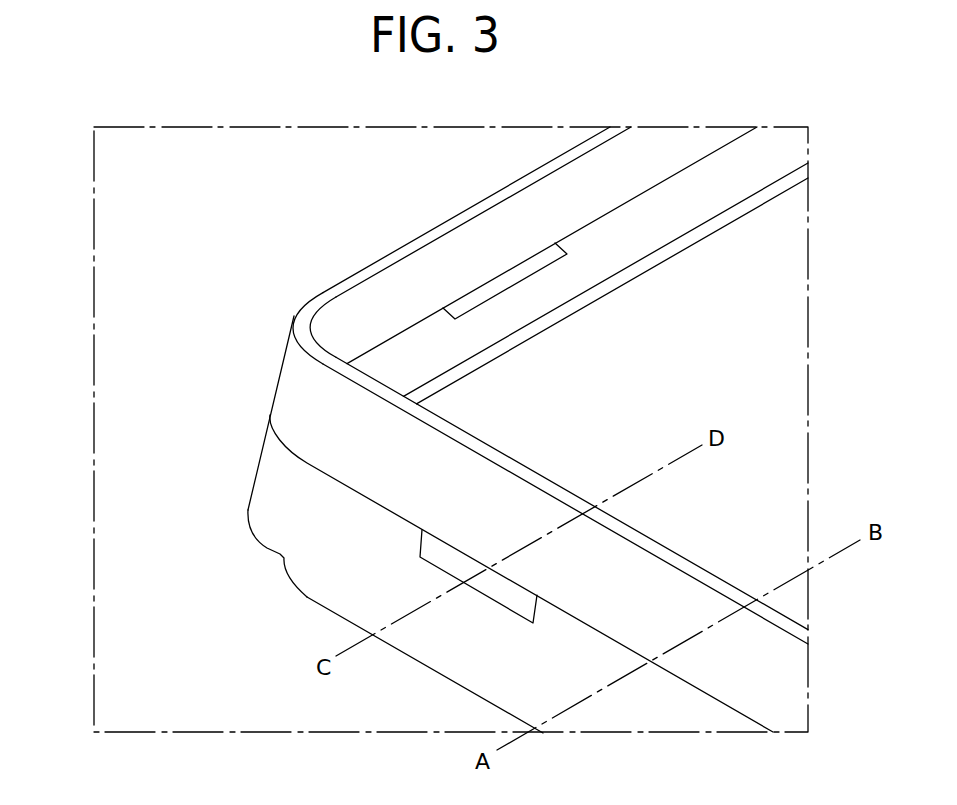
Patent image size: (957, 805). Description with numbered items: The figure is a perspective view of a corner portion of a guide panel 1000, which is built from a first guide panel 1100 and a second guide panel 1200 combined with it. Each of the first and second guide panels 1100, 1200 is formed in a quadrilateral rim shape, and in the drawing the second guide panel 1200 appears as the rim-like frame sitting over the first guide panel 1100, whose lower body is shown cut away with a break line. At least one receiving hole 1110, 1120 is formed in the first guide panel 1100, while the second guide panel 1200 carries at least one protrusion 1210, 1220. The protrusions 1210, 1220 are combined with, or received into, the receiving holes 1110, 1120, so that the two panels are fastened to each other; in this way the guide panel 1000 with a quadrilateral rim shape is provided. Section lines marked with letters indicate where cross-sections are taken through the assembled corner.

The guide panel 1000 is at (89, 98).
The first guide panel 1100 is at (277, 490).
The receiving hole 1110 is at (443, 570).
The receiving hole 1120 is at (527, 285).
The second guide panel 1200 is at (297, 398).
The protrusion 1210 is at (433, 553).
The protrusion 1220 is at (474, 300).